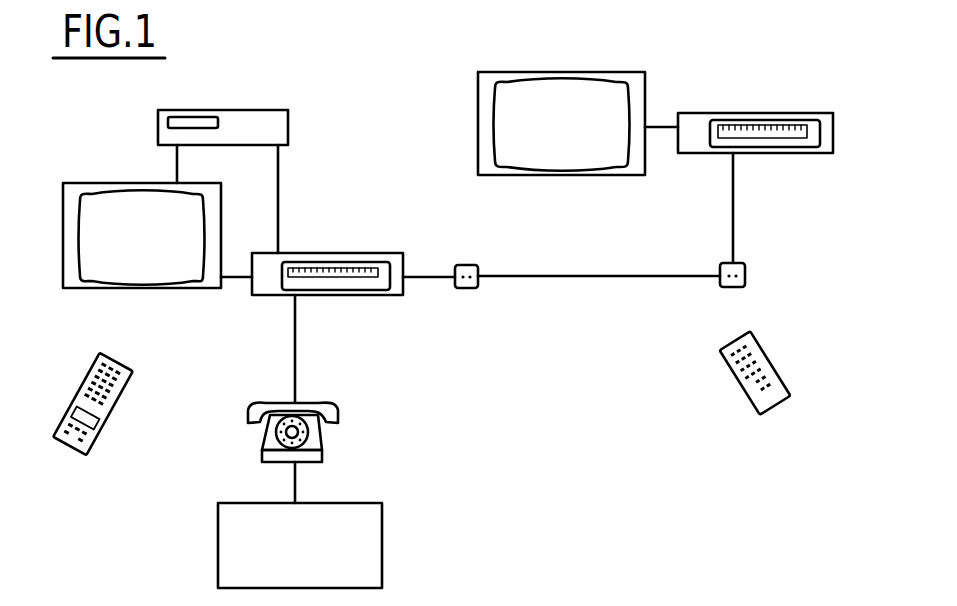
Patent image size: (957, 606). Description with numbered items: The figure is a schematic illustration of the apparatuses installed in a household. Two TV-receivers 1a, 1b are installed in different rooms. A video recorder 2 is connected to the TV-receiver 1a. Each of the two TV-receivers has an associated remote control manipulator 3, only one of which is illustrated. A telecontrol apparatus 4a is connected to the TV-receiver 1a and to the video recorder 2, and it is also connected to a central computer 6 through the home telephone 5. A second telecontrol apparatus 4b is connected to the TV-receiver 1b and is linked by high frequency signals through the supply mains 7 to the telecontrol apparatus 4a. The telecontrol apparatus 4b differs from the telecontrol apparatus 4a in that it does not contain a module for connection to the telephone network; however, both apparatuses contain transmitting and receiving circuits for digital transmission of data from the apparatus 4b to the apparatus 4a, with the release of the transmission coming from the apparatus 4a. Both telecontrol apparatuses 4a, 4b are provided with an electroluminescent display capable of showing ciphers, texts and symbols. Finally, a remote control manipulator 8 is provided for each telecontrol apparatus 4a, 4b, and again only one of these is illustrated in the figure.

The TV-receiver 1a is at (103, 174).
The TV-receiver 1b is at (587, 60).
The video recorder (VCR) 2 is at (272, 102).
The remote control manipulator 3 is at (735, 382).
The telecontrol apparatus (TCG) 4a is at (360, 248).
The telecontrol apparatus (TCG) 4b is at (760, 108).
The home telephone 5 is at (332, 398).
The central computer 6 is at (348, 500).
The supply mains 7 is at (552, 277).
The remote control manipulator 8 is at (123, 416).